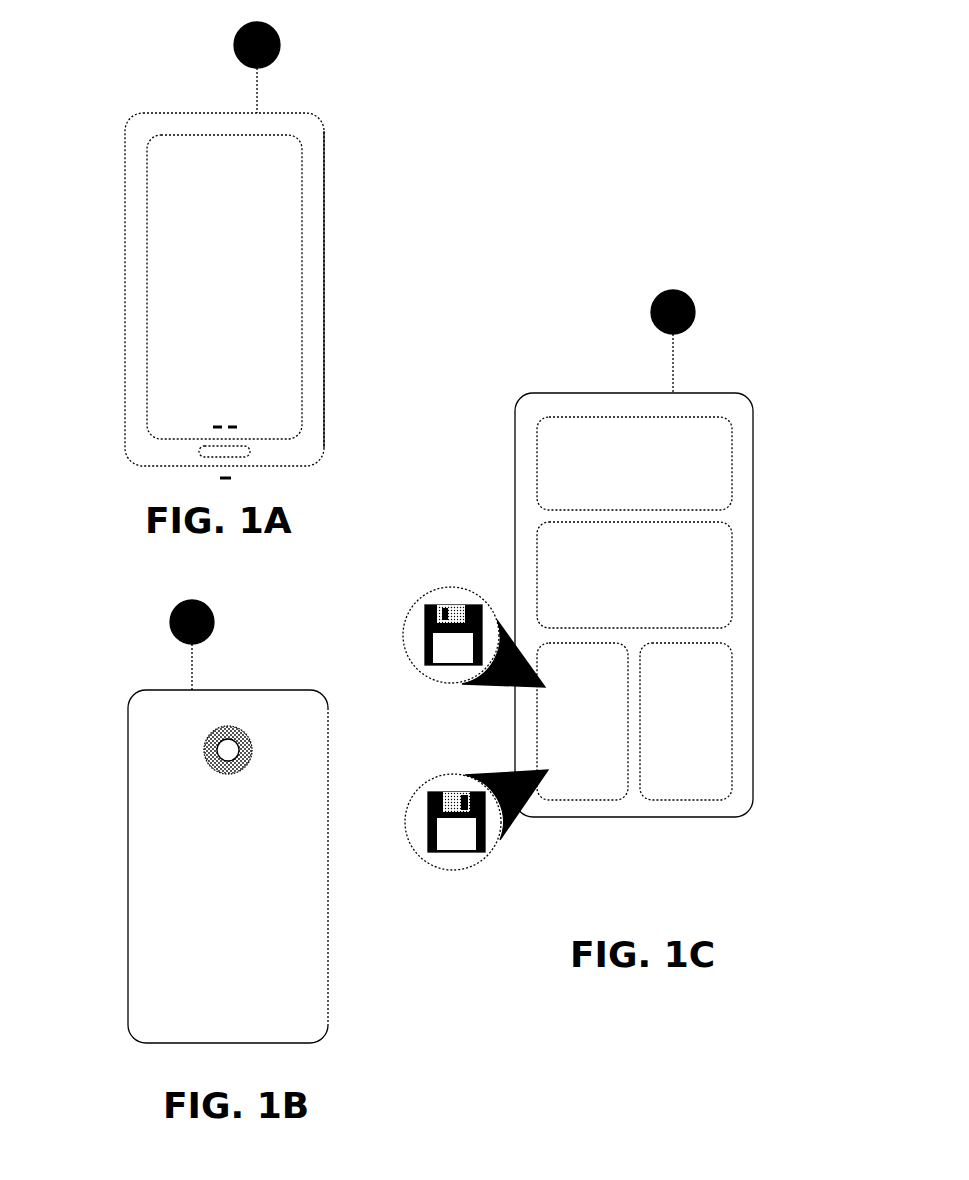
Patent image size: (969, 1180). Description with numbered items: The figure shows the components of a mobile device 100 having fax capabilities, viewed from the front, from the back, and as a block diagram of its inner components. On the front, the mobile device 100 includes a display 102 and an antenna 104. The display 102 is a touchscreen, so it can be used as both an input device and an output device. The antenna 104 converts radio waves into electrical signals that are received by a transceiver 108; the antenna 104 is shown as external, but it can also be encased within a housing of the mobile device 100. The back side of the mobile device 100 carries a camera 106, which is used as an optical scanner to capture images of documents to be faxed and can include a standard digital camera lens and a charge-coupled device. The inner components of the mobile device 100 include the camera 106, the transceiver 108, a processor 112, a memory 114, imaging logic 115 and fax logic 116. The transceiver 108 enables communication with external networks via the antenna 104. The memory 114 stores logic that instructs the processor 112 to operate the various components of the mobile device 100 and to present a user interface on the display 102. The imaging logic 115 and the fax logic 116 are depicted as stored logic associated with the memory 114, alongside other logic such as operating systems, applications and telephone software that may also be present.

In FIG. 1A, the mobile device 100 is at (352, 103).
In FIG. 1B, the mobile device 100 is at (167, 662).
In FIG. 1C, the mobile device 100 is at (723, 363).
In FIG. 1A, the display 102 is at (301, 287).
In FIG. 1A, the antenna 104 is at (239, 59).
In FIG. 1B, the camera 106 is at (235, 727).
In FIG. 1C, the camera 106 is at (543, 450).
In FIG. 1C, the transceiver 108 is at (538, 556).
In FIG. 1C, the processor 112 is at (747, 721).
In FIG. 1C, the memory 114 is at (535, 752).
In FIG. 1C, the imaging logic 115 is at (424, 623).
In FIG. 1C, the fax logic 116 is at (487, 858).